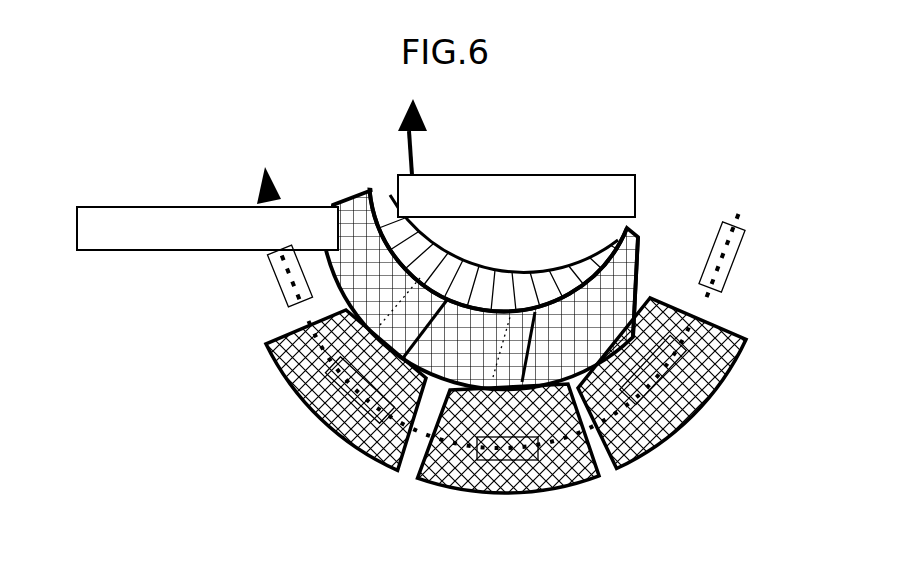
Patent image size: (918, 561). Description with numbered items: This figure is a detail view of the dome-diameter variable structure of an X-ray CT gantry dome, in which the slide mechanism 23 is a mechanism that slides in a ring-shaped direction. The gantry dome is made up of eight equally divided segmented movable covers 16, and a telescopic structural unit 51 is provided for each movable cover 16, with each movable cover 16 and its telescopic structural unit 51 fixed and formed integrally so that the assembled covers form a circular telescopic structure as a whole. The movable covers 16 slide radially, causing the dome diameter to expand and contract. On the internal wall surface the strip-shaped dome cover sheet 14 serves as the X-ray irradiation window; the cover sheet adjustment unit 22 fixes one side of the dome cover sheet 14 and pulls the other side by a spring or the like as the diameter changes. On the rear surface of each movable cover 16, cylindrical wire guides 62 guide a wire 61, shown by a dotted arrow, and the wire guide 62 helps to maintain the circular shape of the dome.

The dome cover sheet 14 is at (382, 187).
The movable cover 16 is at (320, 417).
The cover sheet adjustment unit 22 is at (503, 177).
The slide mechanism 23 is at (186, 207).
The telescopic structural unit 51 is at (643, 268).
The wire 61 is at (307, 317).
The wire guide 62 is at (273, 257).